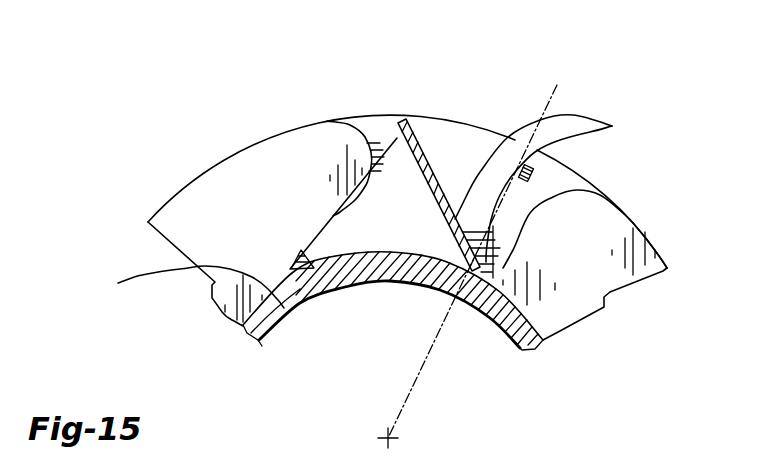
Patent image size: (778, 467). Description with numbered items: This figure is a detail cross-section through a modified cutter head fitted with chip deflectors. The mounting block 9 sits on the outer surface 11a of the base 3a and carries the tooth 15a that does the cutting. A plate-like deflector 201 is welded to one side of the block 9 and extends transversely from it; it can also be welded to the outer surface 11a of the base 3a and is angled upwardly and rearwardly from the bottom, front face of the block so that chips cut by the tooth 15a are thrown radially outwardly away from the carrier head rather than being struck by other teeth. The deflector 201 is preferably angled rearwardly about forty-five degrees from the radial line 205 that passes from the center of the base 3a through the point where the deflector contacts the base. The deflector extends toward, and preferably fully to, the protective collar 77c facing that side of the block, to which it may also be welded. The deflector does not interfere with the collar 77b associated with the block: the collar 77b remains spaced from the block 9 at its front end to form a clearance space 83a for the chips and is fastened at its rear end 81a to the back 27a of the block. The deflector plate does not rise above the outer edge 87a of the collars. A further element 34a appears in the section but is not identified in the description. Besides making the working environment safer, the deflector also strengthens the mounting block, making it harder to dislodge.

The base 3a is at (283, 337).
The mounting block 9 is at (398, 233).
The outer surface of the base 11a is at (181, 294).
The tooth 15a is at (587, 110).
The back of the block 27a is at (388, 127).
The plate 34a is at (365, 232).
The collar 77b is at (261, 175).
The protective collar 77c is at (378, 128).
The rear end of the collar 81a is at (333, 214).
The clearance space 83a is at (550, 181).
The outer edge of the collars 87a is at (212, 163).
The deflector 201 is at (436, 170).
The radial line 205 is at (545, 105).